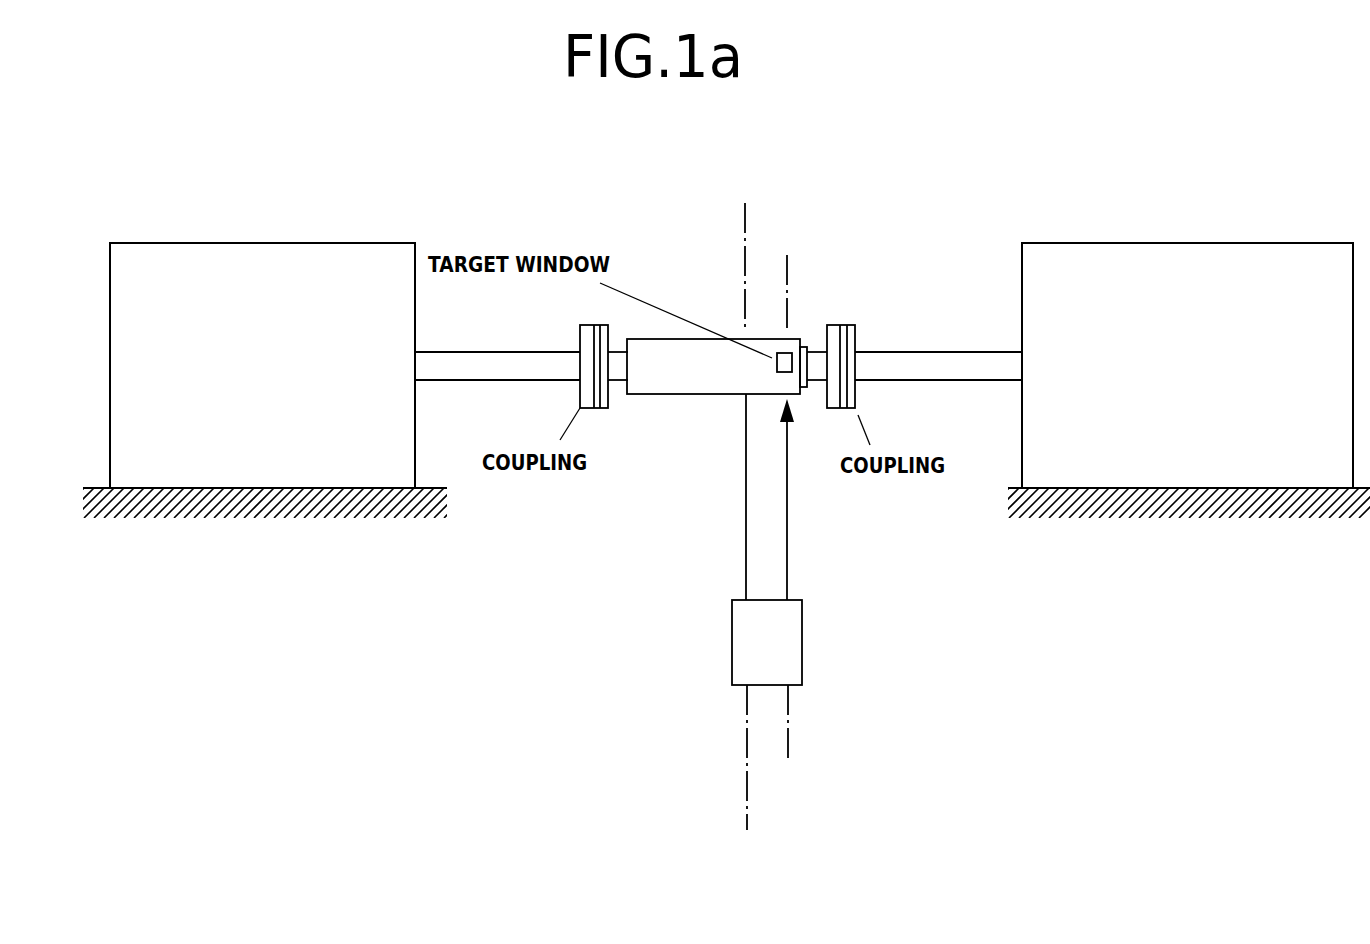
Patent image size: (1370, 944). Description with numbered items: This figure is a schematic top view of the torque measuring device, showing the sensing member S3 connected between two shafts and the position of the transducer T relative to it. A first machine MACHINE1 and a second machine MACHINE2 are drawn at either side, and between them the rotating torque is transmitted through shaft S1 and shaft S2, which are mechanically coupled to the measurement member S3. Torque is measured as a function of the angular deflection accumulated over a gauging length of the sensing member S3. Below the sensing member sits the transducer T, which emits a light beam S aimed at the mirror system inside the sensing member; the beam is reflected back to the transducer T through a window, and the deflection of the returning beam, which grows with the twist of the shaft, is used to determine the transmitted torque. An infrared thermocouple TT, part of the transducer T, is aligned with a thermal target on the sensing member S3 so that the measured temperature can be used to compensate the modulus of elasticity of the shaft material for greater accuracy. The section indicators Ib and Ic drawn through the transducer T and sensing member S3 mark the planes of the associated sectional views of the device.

The shaft S1 is at (505, 350).
The shaft S2 is at (922, 352).
The sensing member S3 is at (723, 396).
The light beam S is at (802, 499).
The infrared thermocouple TT is at (717, 499).
The transducer T is at (623, 647).
The section line Ib is at (787, 285).
The section line Ic is at (745, 229).
The machine 1 MACHINE1 is at (262, 365).
The machine 2 MACHINE2 is at (1187, 365).